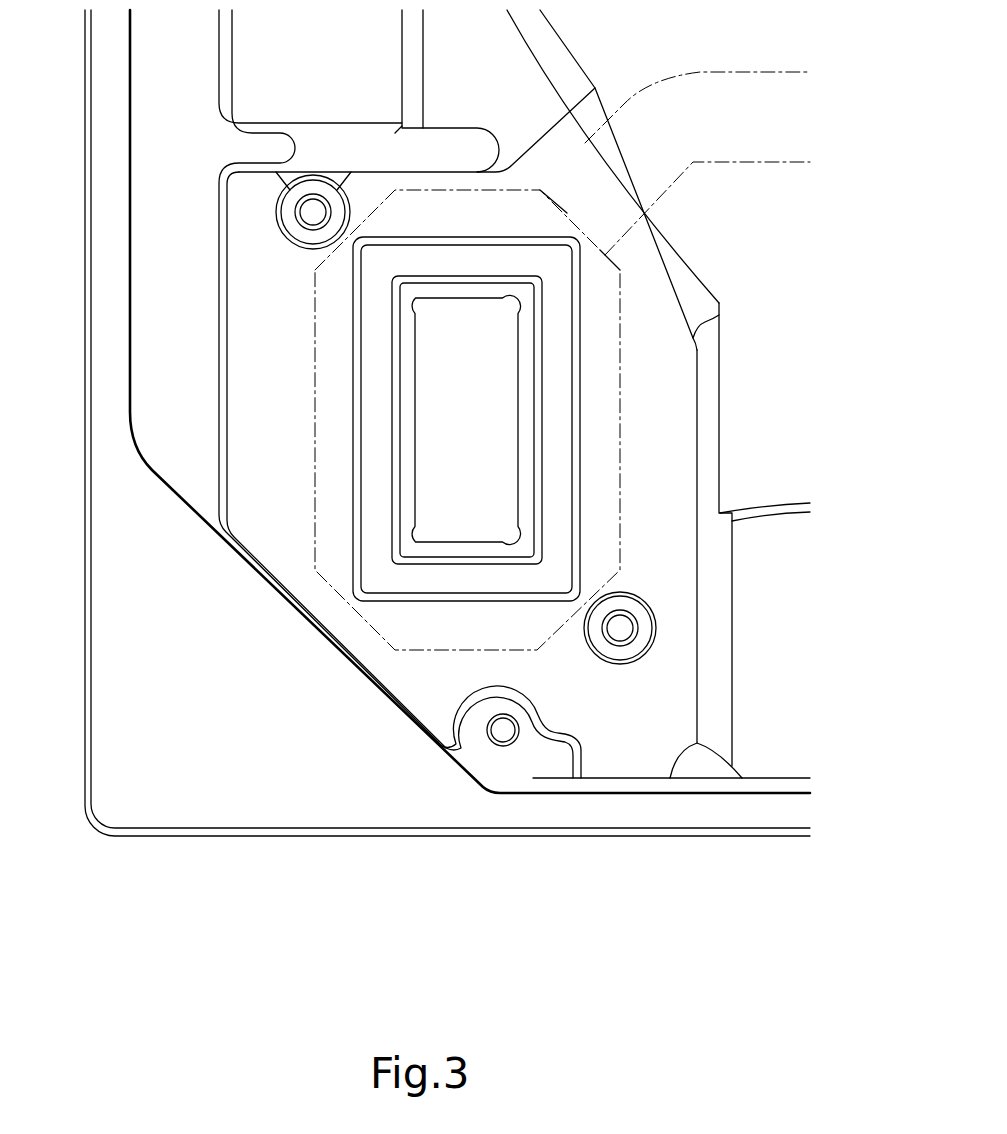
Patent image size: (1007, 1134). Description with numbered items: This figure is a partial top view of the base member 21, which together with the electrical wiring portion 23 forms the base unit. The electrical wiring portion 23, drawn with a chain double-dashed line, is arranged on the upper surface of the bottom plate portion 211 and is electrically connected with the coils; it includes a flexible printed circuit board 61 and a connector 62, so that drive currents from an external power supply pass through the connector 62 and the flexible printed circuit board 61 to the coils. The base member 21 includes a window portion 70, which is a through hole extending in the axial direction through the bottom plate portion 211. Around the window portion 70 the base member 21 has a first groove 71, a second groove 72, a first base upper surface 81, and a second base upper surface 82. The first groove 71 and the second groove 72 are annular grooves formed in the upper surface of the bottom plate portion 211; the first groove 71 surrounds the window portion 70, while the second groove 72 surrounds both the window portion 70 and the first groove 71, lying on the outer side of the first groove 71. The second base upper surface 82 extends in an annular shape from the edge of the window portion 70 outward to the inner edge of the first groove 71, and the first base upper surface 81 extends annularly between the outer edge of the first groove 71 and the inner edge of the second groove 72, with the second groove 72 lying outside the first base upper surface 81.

The base member 21 is at (510, 882).
The bottom plate portion 211 is at (620, 713).
The electrical wiring portion 23 is at (680, 180).
The flexible printed circuit board 61 is at (703, 123).
The connector 62 is at (593, 308).
The window portion 70 is at (457, 468).
The first groove 71 is at (540, 355).
The second groove 72 is at (580, 442).
The first base upper surface 81 is at (378, 349).
The second base upper surface 82 is at (407, 433).